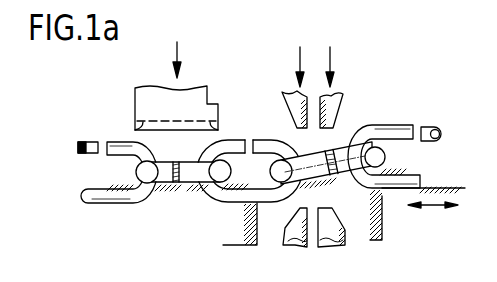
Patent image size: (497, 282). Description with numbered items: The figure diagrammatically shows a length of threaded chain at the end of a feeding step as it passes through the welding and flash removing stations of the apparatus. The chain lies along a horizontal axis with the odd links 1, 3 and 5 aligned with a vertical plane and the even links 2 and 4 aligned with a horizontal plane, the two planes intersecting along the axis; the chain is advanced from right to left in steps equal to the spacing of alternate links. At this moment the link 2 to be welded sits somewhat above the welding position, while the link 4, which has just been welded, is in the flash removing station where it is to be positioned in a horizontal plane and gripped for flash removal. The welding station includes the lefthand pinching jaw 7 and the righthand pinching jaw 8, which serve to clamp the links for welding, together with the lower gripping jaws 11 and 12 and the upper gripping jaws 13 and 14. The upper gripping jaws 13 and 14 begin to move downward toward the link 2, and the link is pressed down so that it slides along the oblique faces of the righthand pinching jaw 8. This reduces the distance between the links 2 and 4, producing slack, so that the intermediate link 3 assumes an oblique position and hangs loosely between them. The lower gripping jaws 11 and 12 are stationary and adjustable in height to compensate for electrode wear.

The odd link 1 is at (385, 130).
The link to be welded 2 is at (338, 174).
The intermediate link 3 is at (228, 150).
The welded link 4 is at (163, 176).
The odd link 5 is at (107, 197).
The lefthand pinching jaw 7 is at (233, 219).
The righthand pinching jaw 8 is at (385, 218).
The lower gripping jaw 11 is at (292, 238).
The lower gripping jaw 12 is at (332, 238).
The upper gripping jaw 13 is at (285, 96).
The upper gripping jaw 14 is at (340, 96).